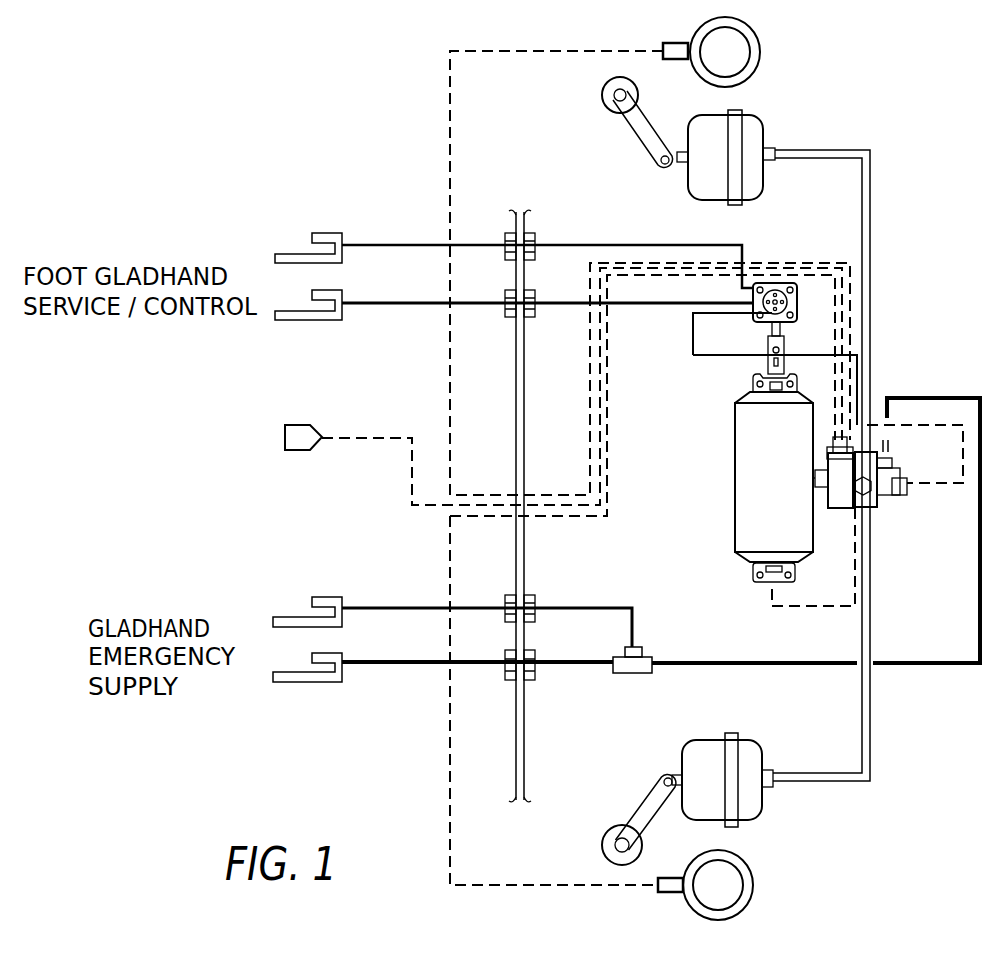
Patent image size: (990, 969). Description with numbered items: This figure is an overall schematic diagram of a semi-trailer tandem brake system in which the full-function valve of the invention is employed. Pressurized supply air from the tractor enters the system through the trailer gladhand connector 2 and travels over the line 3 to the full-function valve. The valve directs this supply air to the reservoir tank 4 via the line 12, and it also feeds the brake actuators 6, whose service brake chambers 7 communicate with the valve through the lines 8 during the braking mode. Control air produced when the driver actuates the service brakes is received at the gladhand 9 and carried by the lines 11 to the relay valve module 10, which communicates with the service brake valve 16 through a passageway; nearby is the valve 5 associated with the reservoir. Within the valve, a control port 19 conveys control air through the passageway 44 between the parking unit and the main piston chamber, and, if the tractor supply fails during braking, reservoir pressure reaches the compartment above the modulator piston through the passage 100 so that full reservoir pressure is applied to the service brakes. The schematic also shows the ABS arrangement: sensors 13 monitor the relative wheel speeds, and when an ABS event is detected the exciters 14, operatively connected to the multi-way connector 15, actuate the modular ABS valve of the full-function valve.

The trailer gladhand connector 2 is at (296, 684).
The line 3 is at (686, 660).
The reservoir tank 4 is at (756, 515).
The control valve 5 is at (822, 488).
The brake actuators 6 is at (708, 132).
The service brake chambers 7 is at (752, 132).
The lines 8 is at (870, 338).
The gladhand 9 is at (275, 312).
The relay valve module 10 is at (780, 283).
The lines 11 is at (478, 303).
The line 12 is at (797, 608).
The sensors 13 is at (675, 878).
The exciters 14 is at (728, 877).
The multi-way connector 15 is at (292, 425).
The service brake valve 16 is at (902, 462).
The control port 19 is at (743, 288).
The passageway 44 is at (712, 357).
The passage 100 is at (769, 325).